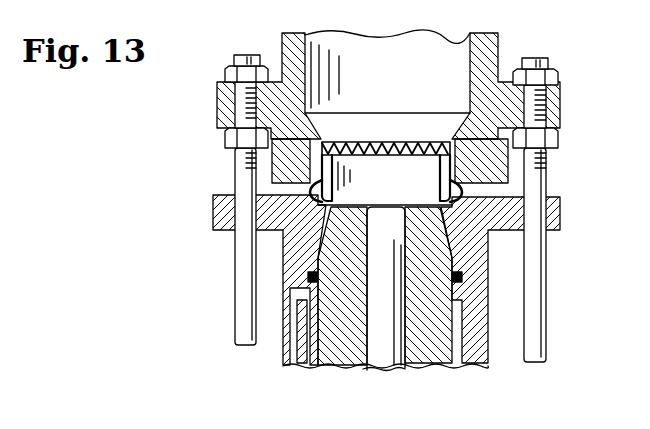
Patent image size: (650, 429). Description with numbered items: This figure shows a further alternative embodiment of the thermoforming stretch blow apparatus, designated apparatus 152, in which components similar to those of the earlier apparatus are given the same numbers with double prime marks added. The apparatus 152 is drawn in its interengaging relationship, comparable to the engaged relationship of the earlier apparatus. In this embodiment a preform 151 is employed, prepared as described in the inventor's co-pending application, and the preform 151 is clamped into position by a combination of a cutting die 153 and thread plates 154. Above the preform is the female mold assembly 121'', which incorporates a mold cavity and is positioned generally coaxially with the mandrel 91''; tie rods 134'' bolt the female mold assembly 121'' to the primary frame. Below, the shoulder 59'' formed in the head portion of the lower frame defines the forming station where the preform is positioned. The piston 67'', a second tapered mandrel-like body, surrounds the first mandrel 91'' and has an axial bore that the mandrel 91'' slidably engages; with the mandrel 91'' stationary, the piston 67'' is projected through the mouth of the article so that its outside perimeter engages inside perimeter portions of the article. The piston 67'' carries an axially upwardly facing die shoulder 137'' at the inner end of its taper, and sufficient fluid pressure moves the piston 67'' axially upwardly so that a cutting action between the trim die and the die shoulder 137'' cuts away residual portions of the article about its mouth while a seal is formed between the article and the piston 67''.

The female mold assembly 121'' is at (343, 76).
The apparatus 152 is at (512, 38).
The preform 151 is at (443, 140).
The thread plates 154 is at (500, 168).
The cutting die 153 is at (470, 185).
The shoulder 59'' is at (415, 280).
The die shoulder 137'' is at (453, 302).
The tie rods 134'' is at (386, 208).
The mandrel 91'' is at (371, 305).
The piston 67'' is at (392, 305).